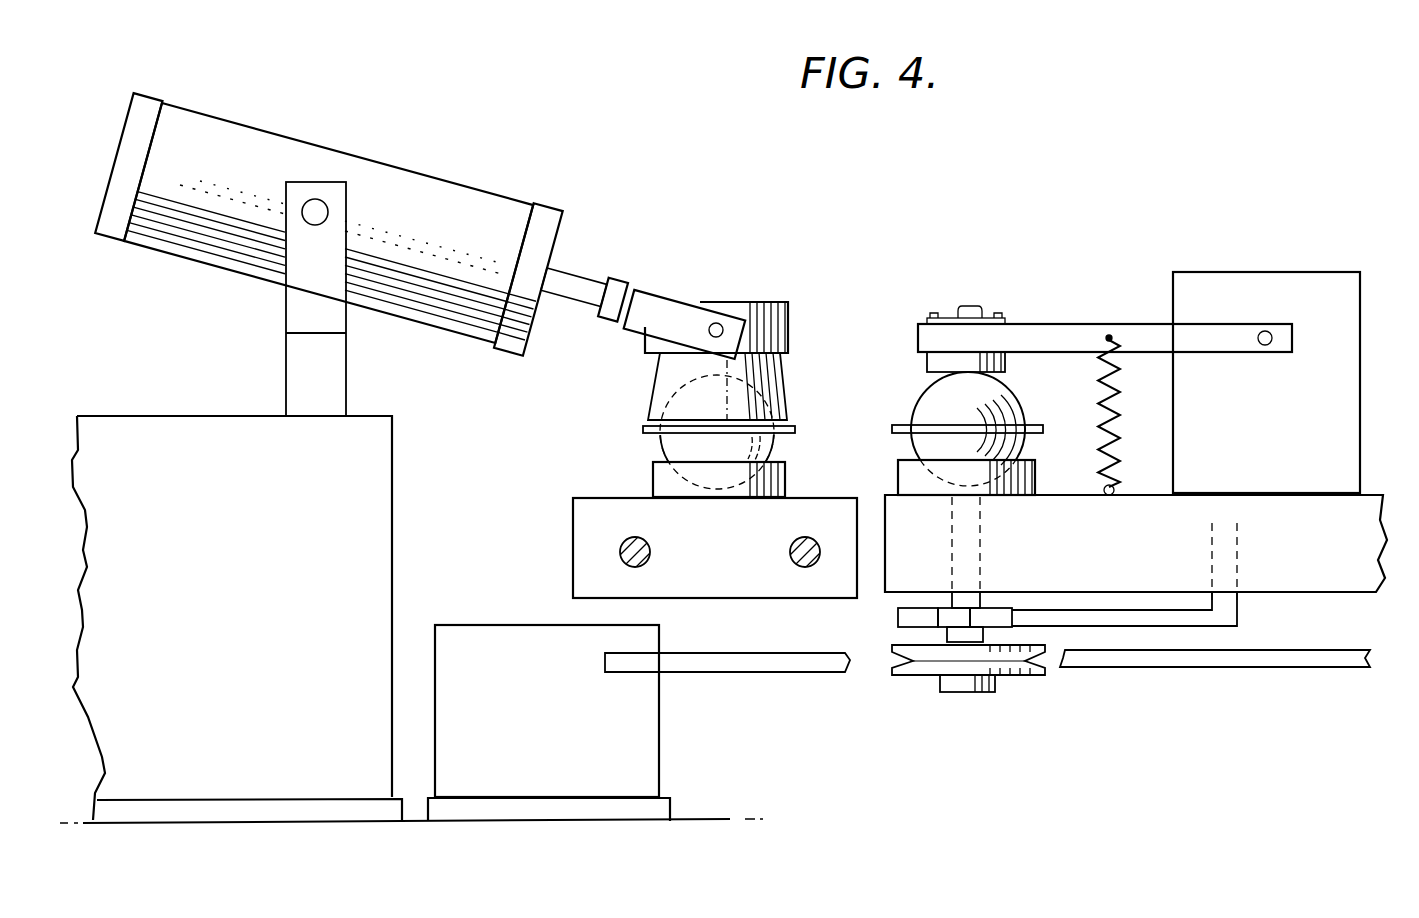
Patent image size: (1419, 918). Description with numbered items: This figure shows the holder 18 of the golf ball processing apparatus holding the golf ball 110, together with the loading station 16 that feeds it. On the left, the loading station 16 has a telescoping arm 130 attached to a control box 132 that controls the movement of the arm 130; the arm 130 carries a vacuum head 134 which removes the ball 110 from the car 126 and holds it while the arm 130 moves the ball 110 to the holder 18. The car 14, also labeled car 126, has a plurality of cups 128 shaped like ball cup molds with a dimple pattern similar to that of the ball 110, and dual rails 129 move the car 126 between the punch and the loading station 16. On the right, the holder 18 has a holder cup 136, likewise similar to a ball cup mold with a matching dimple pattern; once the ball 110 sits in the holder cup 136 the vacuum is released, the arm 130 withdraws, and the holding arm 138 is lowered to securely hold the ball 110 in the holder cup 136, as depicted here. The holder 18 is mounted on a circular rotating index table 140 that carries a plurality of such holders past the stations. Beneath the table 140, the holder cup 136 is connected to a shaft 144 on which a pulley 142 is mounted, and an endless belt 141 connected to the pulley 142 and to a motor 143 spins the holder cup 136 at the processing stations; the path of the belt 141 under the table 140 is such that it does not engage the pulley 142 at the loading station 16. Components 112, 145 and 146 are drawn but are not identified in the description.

The car 14 is at (518, 596).
The loading station 16 is at (636, 191).
The holder 18 is at (1335, 263).
The golf ball 110 is at (785, 447).
The disc 112 is at (790, 432).
The car 126 is at (573, 550).
The cups 128 is at (653, 473).
The dual rails 129 is at (790, 560).
The telescoping arm 130 is at (452, 186).
The control box 132 is at (386, 492).
The vacuum head 134 is at (657, 380).
The holder cup 136 is at (898, 478).
The holding arm 138 is at (1045, 323).
The rotating index table 140 is at (1375, 494).
The endless belt 141 is at (745, 665).
The pulley 142 is at (1018, 675).
The motor 143 is at (655, 743).
The shaft 144 is at (995, 604).
The nut 145 is at (990, 630).
The link 146 is at (1240, 612).